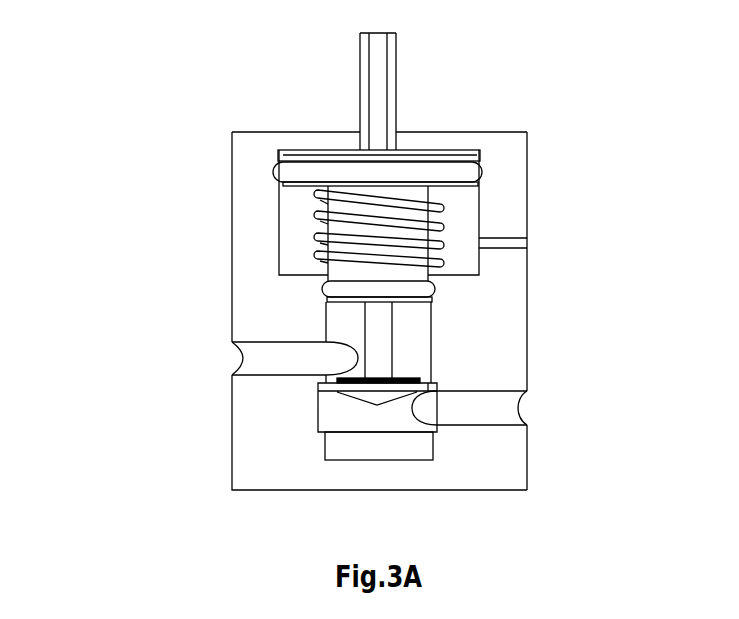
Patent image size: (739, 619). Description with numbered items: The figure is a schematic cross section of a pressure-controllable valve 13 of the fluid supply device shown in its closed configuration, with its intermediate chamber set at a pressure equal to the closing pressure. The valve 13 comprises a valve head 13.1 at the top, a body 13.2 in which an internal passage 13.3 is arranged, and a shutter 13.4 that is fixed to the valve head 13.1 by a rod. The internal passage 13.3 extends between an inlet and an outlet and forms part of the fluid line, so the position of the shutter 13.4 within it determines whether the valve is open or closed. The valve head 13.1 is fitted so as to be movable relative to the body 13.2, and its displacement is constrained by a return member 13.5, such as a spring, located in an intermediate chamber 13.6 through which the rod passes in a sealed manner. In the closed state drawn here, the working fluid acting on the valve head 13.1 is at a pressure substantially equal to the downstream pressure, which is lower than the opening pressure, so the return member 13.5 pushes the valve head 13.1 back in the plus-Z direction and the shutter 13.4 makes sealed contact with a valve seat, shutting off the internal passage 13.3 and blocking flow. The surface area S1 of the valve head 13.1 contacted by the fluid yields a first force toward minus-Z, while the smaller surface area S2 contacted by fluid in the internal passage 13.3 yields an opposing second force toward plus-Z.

The valve 13 is at (140, 88).
The valve head 13.1 is at (473, 170).
The body 13.2 is at (531, 301).
The internal passage 13.3 is at (254, 363).
The shutter 13.4 is at (433, 388).
The return member 13.5 is at (443, 226).
The intermediate chamber 13.6 is at (467, 203).
The surface area of the valve head S1 is at (429, 149).
The surface area contacted by fluid in the internal passage S2 is at (423, 310).